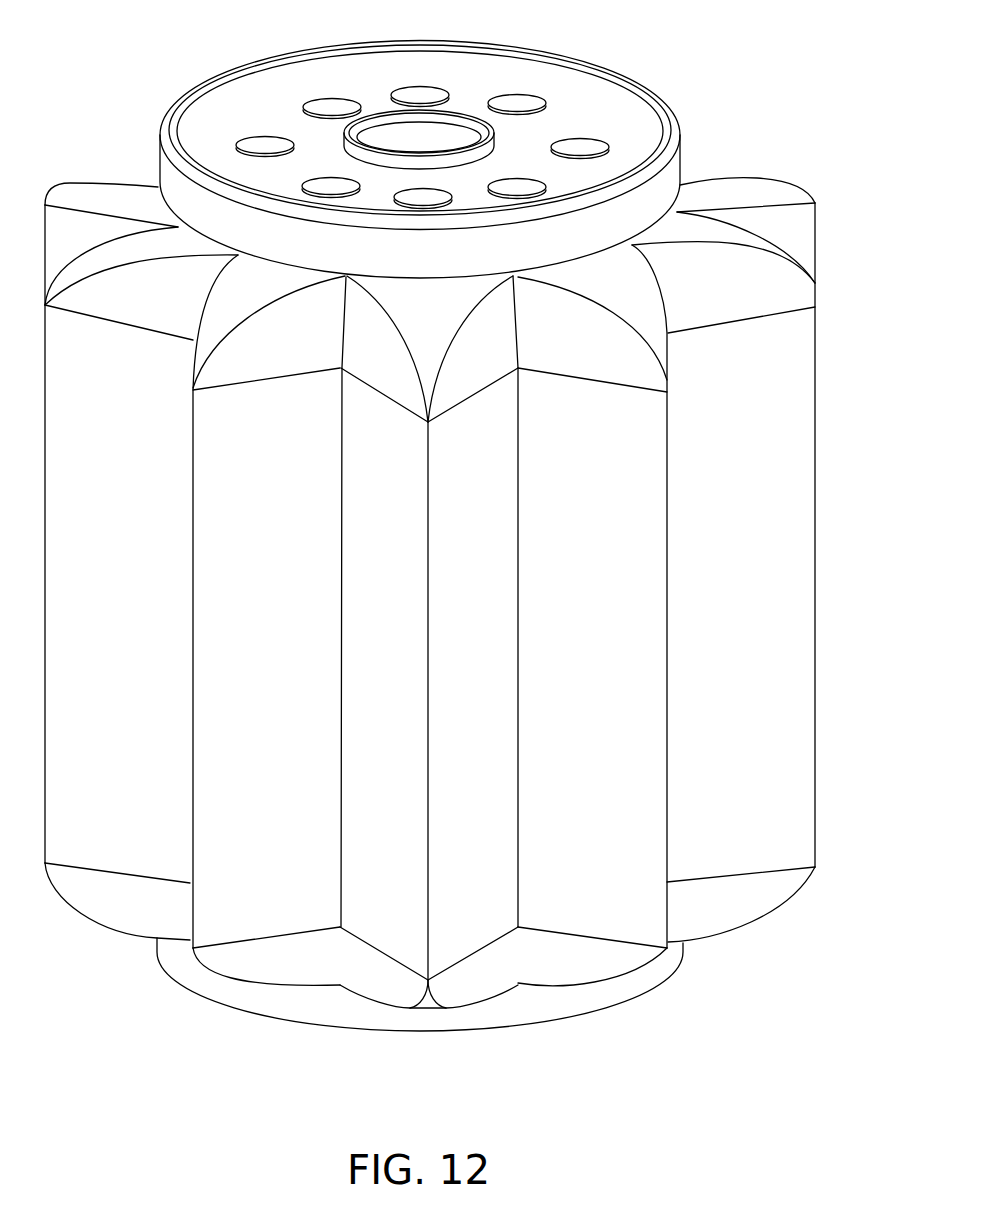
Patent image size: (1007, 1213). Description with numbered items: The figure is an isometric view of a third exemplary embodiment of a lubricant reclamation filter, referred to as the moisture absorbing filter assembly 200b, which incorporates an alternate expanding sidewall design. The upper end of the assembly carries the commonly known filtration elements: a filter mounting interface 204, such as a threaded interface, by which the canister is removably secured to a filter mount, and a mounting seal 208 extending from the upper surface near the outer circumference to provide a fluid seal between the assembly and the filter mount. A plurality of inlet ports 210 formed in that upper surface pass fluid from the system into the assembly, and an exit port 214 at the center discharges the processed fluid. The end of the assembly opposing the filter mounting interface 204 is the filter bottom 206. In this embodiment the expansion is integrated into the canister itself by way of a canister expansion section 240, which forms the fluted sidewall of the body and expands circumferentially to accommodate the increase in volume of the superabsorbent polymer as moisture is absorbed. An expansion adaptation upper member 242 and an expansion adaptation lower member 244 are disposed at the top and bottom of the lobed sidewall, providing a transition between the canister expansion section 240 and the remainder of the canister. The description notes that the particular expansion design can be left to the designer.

The moisture absorbing filter assembly 200b is at (118, 56).
The filter mounting interface 204 is at (357, 138).
The filter bottom 206 is at (527, 1008).
The mounting seal 208 is at (651, 95).
The inlet ports 210 is at (578, 147).
The exit port 214 is at (419, 143).
The canister expansion section 240 is at (778, 788).
The expansion adaptation upper member 242 is at (758, 202).
The expansion adaptation lower member 244 is at (732, 907).